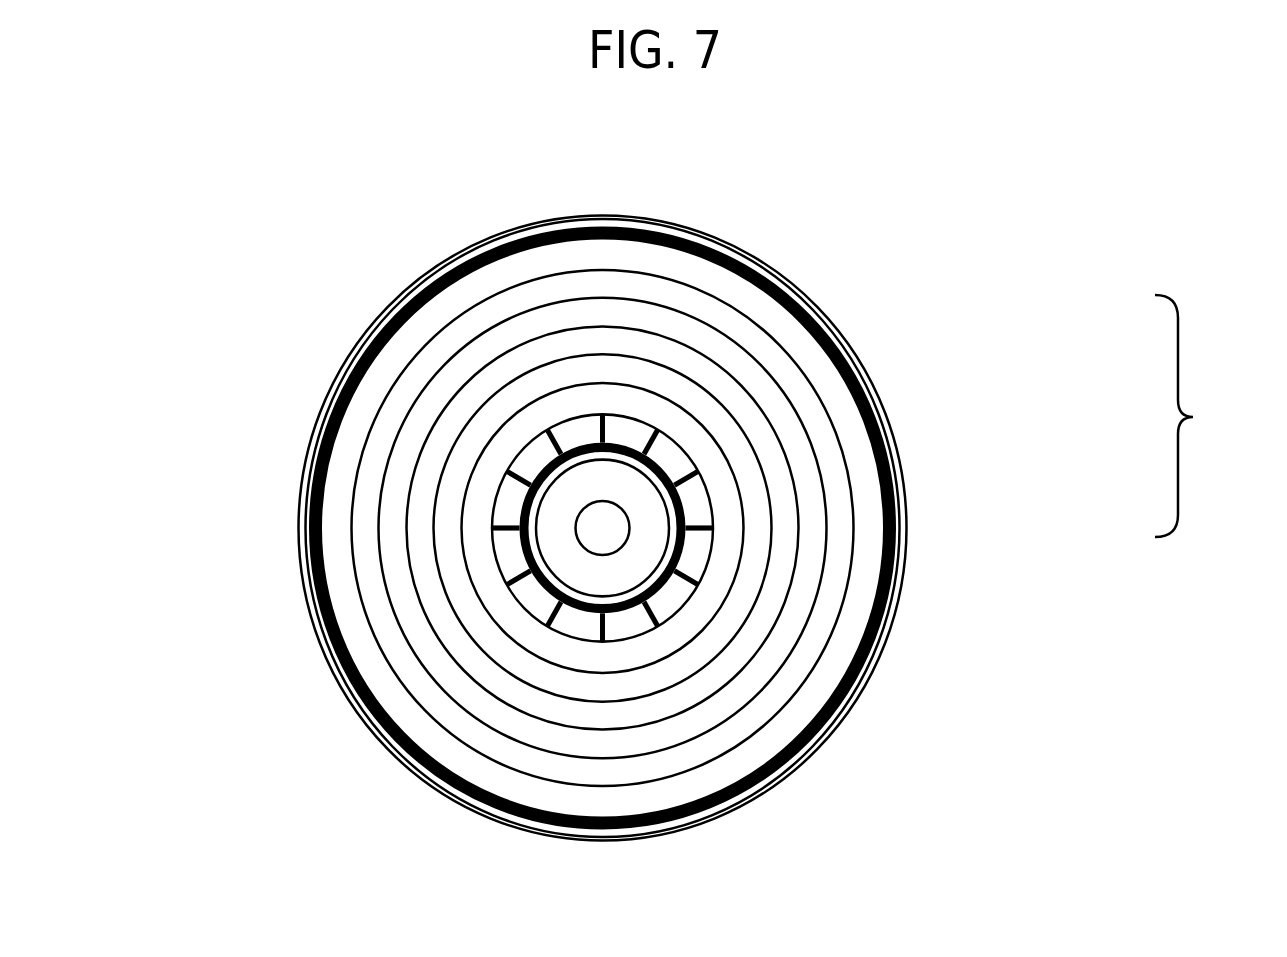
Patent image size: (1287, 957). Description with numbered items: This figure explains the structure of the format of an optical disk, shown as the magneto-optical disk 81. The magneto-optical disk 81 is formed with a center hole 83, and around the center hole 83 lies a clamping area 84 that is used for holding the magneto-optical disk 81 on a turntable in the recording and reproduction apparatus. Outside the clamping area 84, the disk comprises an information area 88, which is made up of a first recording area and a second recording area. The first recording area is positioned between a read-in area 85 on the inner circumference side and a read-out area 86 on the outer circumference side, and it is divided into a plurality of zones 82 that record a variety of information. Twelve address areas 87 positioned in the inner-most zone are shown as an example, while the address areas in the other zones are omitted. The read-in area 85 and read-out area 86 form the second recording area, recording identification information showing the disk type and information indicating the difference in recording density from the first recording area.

The magneto-optical disk 81 is at (546, 199).
The zone 82 is at (815, 420).
The center hole 83 is at (591, 522).
The clamping area 84 is at (560, 548).
The read-in area 85 is at (667, 470).
The read-out area 86 is at (897, 508).
The address area 87 is at (713, 527).
The information area 88 is at (1189, 416).